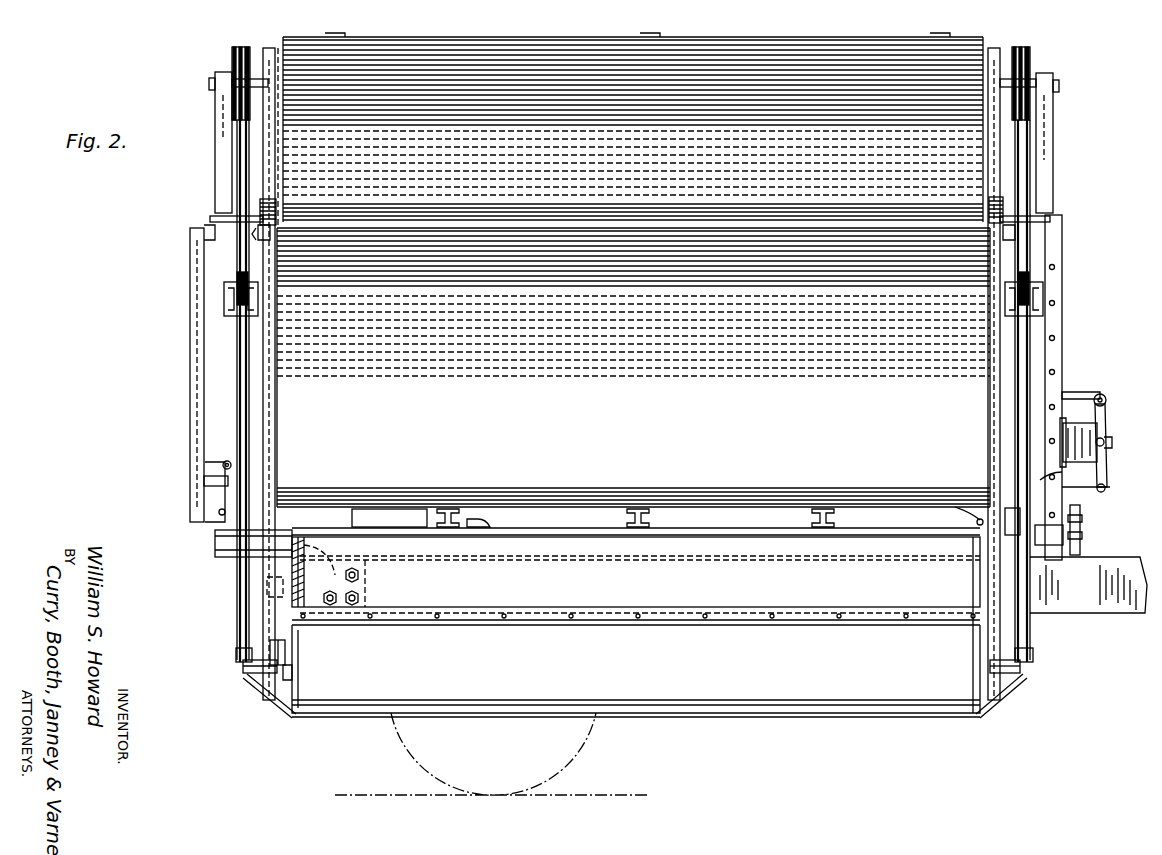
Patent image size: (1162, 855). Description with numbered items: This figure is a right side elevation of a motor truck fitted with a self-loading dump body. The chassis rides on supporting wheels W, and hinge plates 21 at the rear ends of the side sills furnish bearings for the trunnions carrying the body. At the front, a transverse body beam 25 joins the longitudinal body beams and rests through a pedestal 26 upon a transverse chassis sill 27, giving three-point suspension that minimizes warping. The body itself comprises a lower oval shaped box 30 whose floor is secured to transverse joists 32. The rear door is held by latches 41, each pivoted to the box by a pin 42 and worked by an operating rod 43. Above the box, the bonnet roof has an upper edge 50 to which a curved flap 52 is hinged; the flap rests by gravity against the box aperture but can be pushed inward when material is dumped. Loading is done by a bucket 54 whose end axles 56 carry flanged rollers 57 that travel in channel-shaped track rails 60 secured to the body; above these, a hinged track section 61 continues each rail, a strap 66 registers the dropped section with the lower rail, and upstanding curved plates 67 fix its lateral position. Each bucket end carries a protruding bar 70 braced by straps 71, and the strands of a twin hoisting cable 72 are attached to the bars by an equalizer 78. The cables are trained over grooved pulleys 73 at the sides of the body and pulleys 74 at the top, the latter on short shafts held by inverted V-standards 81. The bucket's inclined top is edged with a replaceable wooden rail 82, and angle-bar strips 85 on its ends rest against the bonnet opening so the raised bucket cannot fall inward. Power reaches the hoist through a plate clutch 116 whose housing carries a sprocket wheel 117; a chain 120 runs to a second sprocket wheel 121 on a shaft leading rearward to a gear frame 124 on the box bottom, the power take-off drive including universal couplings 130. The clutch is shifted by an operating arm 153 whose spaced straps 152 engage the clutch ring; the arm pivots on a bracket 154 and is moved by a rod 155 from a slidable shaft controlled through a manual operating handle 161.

The hinge plates 21 is at (362, 576).
The transverse body beam 25 is at (1000, 543).
The pedestal 26 is at (1090, 557).
The transverse chassis sill 27 is at (1010, 587).
The lower oval shaped box 30 is at (633, 367).
The transverse joists 32 is at (648, 515).
The latches 41 is at (218, 483).
The pin 42 is at (231, 464).
The operating rod 43 is at (227, 523).
The upper edge of the bonnet roof 50 is at (335, 34).
The curved flap 52 is at (633, 163).
The bucket 54 is at (636, 627).
The axles 56 is at (285, 659).
The flanged rollers 57 is at (283, 640).
The track rails 60 is at (276, 398).
The hinged track section 61 is at (272, 206).
The strap 66 is at (285, 249).
The upstanding curved plates 67 is at (278, 224).
The protruding bar 70 is at (245, 672).
The straps 71 is at (276, 716).
The twin hoisting cable 72 is at (240, 190).
The grooved pulleys 73 is at (224, 286).
The grooved pulleys 74 is at (232, 62).
The equalizer 78 is at (240, 658).
The inverted V-standards 81 is at (222, 176).
The wooden rail 82 is at (675, 618).
The angle-bar strips 85 is at (280, 690).
The plate clutch 116 is at (1105, 446).
The sprocket wheel 117 is at (1106, 487).
The chain 120 is at (1080, 508).
The sprocket wheel 121 is at (1080, 530).
The gear frame 124 is at (395, 517).
The universal couplings 130 is at (482, 520).
The spaced straps 152 is at (1100, 430).
The operating arm 153 is at (1104, 406).
The bracket 154 is at (1070, 392).
The rod 155 is at (1062, 480).
The manual operating handle 161 is at (920, 492).
The supporting wheels W is at (588, 740).